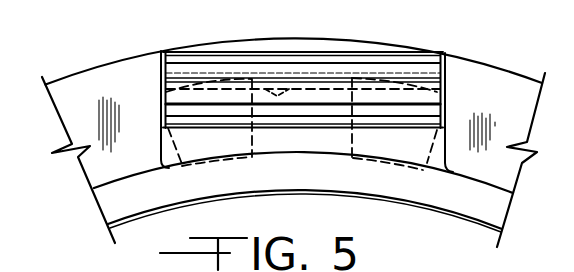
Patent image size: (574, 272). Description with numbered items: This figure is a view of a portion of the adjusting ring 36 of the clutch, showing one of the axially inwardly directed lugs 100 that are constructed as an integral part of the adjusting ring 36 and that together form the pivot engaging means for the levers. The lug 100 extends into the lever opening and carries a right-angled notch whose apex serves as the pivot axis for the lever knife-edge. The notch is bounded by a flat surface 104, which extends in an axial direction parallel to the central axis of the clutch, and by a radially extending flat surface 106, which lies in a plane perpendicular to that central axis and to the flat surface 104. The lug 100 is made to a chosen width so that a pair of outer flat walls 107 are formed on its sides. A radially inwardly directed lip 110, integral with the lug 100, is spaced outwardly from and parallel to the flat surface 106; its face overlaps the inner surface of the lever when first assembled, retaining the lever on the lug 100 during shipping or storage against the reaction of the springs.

The adjusting ring 36 is at (86, 97).
The lug 100 is at (392, 58).
The flat surface 104 is at (265, 87).
The radially extending flat surface 106 is at (172, 112).
The outer flat walls 107 is at (164, 73).
The lip 110 is at (313, 100).